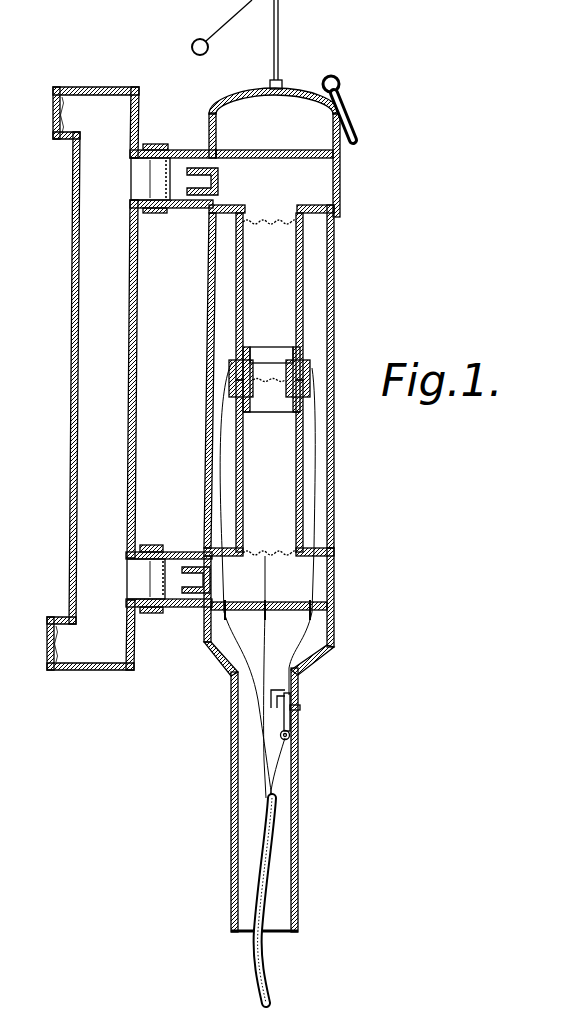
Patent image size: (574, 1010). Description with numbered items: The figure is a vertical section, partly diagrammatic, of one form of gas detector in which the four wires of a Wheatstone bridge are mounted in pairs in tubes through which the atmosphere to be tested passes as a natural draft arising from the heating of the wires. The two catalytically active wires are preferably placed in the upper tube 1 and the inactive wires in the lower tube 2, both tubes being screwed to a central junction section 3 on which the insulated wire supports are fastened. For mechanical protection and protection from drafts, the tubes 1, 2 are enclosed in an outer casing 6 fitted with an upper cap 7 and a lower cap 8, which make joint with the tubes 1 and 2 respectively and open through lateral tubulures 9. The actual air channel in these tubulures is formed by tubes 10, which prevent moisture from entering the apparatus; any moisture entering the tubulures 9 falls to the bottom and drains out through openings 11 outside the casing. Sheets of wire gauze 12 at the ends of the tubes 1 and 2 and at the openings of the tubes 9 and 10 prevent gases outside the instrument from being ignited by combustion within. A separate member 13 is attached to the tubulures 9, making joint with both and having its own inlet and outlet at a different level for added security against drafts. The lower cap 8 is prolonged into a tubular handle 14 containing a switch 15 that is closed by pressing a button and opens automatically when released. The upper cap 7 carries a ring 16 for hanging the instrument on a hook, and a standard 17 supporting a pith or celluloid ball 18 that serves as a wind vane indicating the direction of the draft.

The upper tube 1 is at (305, 300).
The lower tube 2 is at (304, 481).
The junction section 3 is at (311, 380).
The outer casing 6 is at (334, 358).
The upper cap 7 is at (341, 188).
The lower cap 8 is at (335, 592).
The lateral tubulures 9 is at (185, 207).
The tubes 10 is at (216, 172).
The openings 11 is at (203, 208).
The wire gauze 12 is at (172, 185).
The separate member 13 is at (140, 120).
The tubular handle 14 is at (300, 789).
The switch 15 is at (300, 690).
The ring 16 is at (353, 128).
The standard 17 is at (281, 40).
The pith or celluloid ball 18 is at (208, 49).